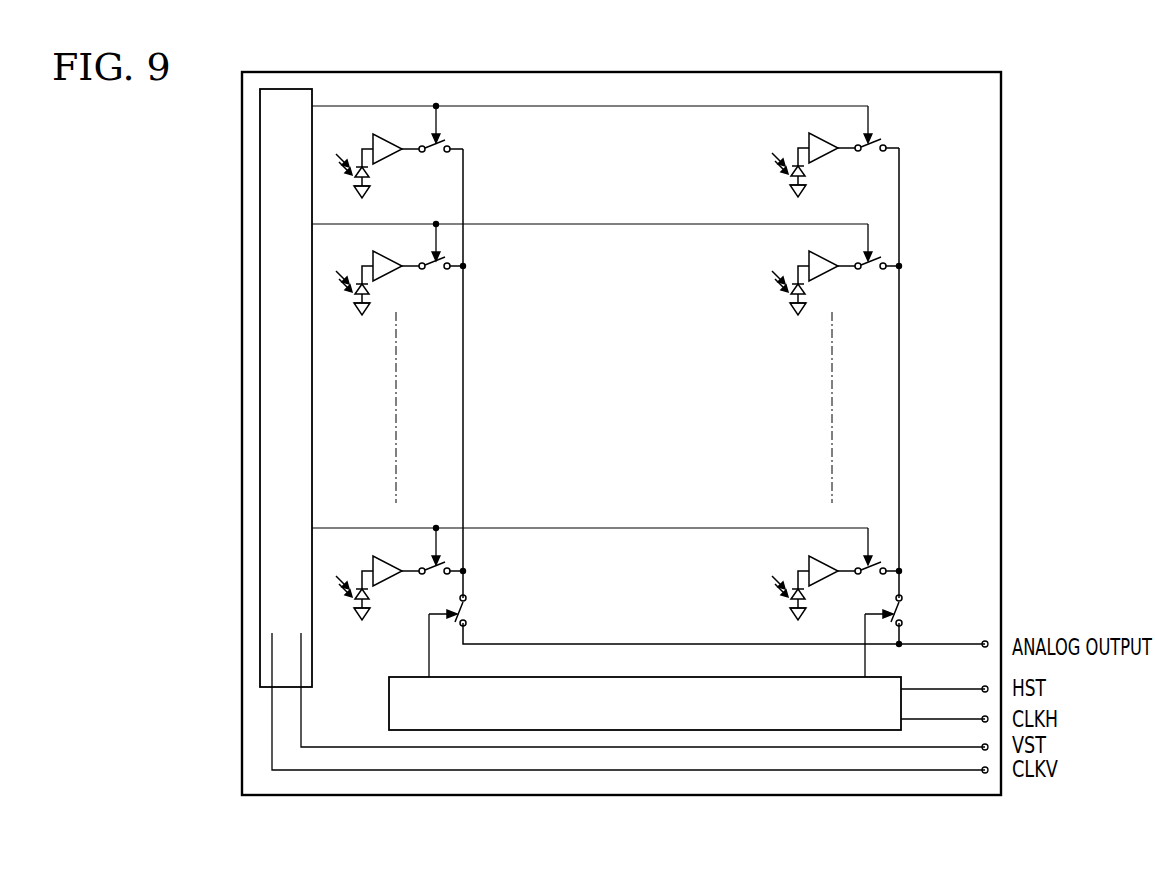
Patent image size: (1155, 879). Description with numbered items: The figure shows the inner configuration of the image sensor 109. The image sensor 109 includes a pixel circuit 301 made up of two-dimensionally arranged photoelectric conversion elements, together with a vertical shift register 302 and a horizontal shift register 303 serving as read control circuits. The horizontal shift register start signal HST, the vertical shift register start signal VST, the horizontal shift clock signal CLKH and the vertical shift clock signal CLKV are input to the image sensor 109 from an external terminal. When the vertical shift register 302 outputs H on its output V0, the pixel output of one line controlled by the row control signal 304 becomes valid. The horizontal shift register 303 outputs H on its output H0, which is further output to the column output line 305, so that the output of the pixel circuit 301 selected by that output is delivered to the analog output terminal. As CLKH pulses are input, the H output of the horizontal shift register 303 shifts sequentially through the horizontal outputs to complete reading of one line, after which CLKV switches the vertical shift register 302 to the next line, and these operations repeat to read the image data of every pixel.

The image sensor 109 is at (681, 72).
The pixel circuit 301 is at (385, 154).
The vertical shift register 302 is at (284, 89).
The horizontal shift register 303 is at (587, 700).
The row control signal 304 is at (500, 106).
The column output line 305 is at (465, 352).